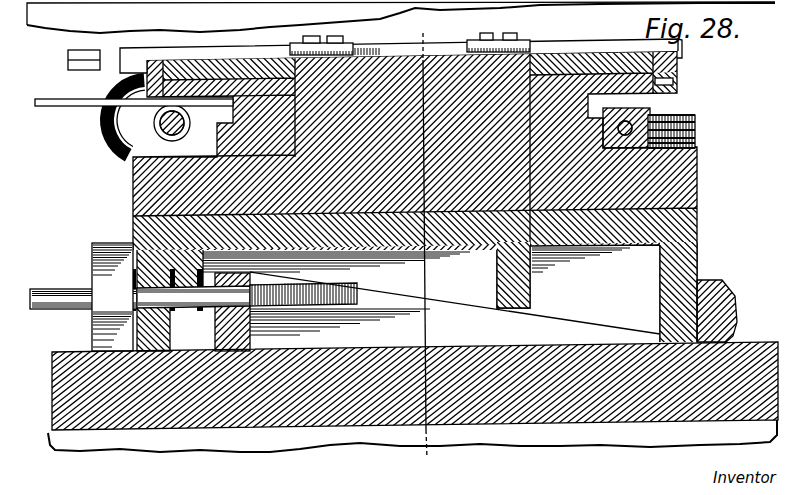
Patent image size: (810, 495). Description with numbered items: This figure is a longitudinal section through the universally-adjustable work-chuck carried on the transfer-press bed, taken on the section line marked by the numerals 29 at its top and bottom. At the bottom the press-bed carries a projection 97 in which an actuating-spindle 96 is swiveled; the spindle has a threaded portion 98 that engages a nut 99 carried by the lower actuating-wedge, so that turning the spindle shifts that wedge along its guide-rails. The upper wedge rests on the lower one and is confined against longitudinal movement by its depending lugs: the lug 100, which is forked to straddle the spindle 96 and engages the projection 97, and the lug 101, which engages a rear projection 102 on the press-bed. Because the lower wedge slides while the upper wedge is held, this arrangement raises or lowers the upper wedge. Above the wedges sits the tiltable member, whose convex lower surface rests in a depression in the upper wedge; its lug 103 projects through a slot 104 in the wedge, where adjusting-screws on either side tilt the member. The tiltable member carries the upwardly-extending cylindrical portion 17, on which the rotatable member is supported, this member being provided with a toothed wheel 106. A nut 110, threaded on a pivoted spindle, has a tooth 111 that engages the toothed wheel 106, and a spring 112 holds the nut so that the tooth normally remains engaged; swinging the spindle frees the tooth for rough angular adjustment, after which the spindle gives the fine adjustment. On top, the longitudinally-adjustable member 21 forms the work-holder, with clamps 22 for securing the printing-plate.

The cylindrical portion 17 is at (438, 70).
The longitudinally-adjustable member 21 is at (241, 48).
The clamps 22 is at (347, 47).
The slots 29 is at (423, 249).
The actuating-spindle 96 is at (61, 289).
The projection 97 is at (137, 331).
The threaded portion 98 is at (356, 286).
The nut 99 is at (233, 332).
The depending lug 100 is at (148, 254).
The depending lug 101 is at (662, 283).
The rear projection 102 is at (726, 293).
The lug 103 is at (530, 290).
The slot 104 is at (490, 250).
The toothed wheel 106 is at (640, 108).
The nut 110 is at (693, 130).
The tooth 111 is at (690, 116).
The spring 112 is at (694, 143).